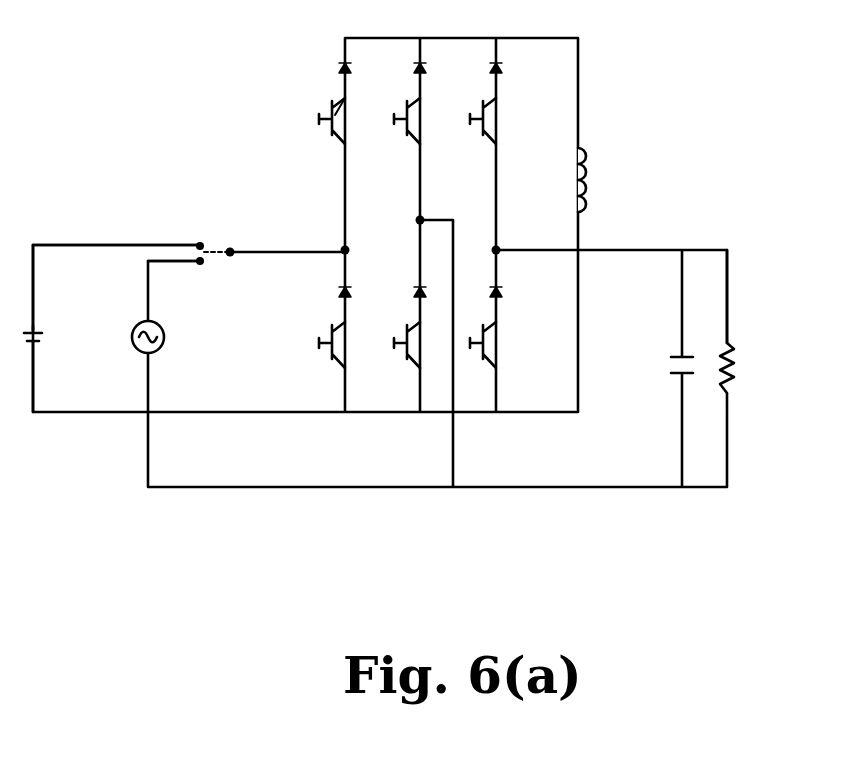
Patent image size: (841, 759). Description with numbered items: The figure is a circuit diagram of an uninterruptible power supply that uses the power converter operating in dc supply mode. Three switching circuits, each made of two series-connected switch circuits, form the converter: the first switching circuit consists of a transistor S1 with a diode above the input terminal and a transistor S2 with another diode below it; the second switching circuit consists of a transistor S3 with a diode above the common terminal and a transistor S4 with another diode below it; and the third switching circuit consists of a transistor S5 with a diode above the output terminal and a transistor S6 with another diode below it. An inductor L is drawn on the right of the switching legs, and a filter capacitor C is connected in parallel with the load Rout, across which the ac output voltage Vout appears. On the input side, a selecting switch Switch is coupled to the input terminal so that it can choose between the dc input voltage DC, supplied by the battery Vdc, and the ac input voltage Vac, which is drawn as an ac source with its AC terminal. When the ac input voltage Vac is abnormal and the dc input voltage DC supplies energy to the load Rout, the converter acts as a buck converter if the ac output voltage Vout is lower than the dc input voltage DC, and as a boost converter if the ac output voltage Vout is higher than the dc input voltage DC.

The transistor S1 is at (325, 103).
The transistor S2 is at (328, 327).
The transistor S3 is at (402, 103).
The transistor S4 is at (403, 327).
The transistor S5 is at (478, 103).
The transistor S6 is at (480, 327).
The inductor L is at (593, 180).
The filter capacitor C is at (669, 365).
The load Rout is at (759, 379).
The ac output voltage Vout is at (756, 296).
The ac input voltage Vac is at (123, 337).
The DC battery source Vdc is at (33, 328).
The dc input voltage DC is at (121, 227).
The AC input terminal AC is at (181, 282).
The selecting switch Switch is at (274, 236).